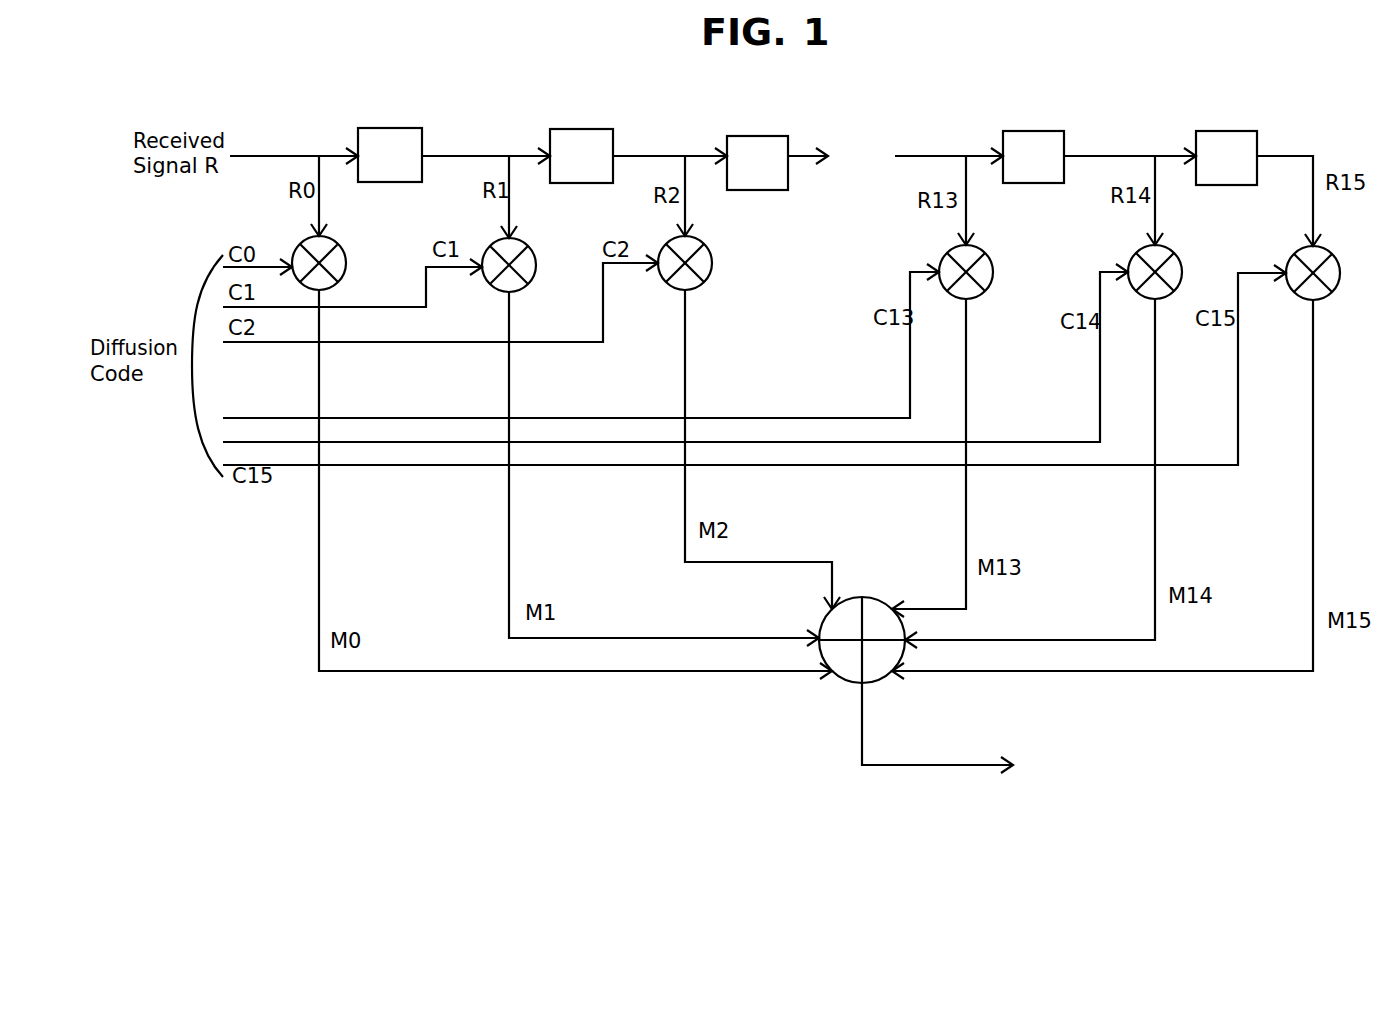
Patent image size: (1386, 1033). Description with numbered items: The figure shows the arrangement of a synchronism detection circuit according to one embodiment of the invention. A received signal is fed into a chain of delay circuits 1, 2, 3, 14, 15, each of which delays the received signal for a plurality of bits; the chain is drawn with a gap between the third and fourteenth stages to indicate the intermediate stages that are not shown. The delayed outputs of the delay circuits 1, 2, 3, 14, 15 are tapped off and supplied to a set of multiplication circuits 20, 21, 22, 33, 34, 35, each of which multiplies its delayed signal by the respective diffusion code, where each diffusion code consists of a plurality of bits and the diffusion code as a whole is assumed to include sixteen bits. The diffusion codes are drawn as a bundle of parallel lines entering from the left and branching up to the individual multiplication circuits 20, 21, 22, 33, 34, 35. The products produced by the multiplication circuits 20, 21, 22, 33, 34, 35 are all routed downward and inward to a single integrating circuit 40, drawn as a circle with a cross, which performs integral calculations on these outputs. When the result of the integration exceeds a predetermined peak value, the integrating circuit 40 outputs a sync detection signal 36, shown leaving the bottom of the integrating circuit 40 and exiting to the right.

The delay circuit 1 is at (387, 128).
The delay circuit 2 is at (577, 129).
The delay circuit 3 is at (750, 136).
The delay circuit 14 is at (1025, 131).
The delay circuit 15 is at (1220, 131).
The multiplication circuit 20 is at (338, 244).
The multiplication circuit 21 is at (528, 246).
The multiplication circuit 22 is at (704, 244).
The multiplication circuit 33 is at (985, 253).
The multiplication circuit 34 is at (1174, 253).
The multiplication circuit 35 is at (1332, 254).
The integrating circuit 40 is at (843, 685).
The sync detection signal 36 is at (1113, 731).